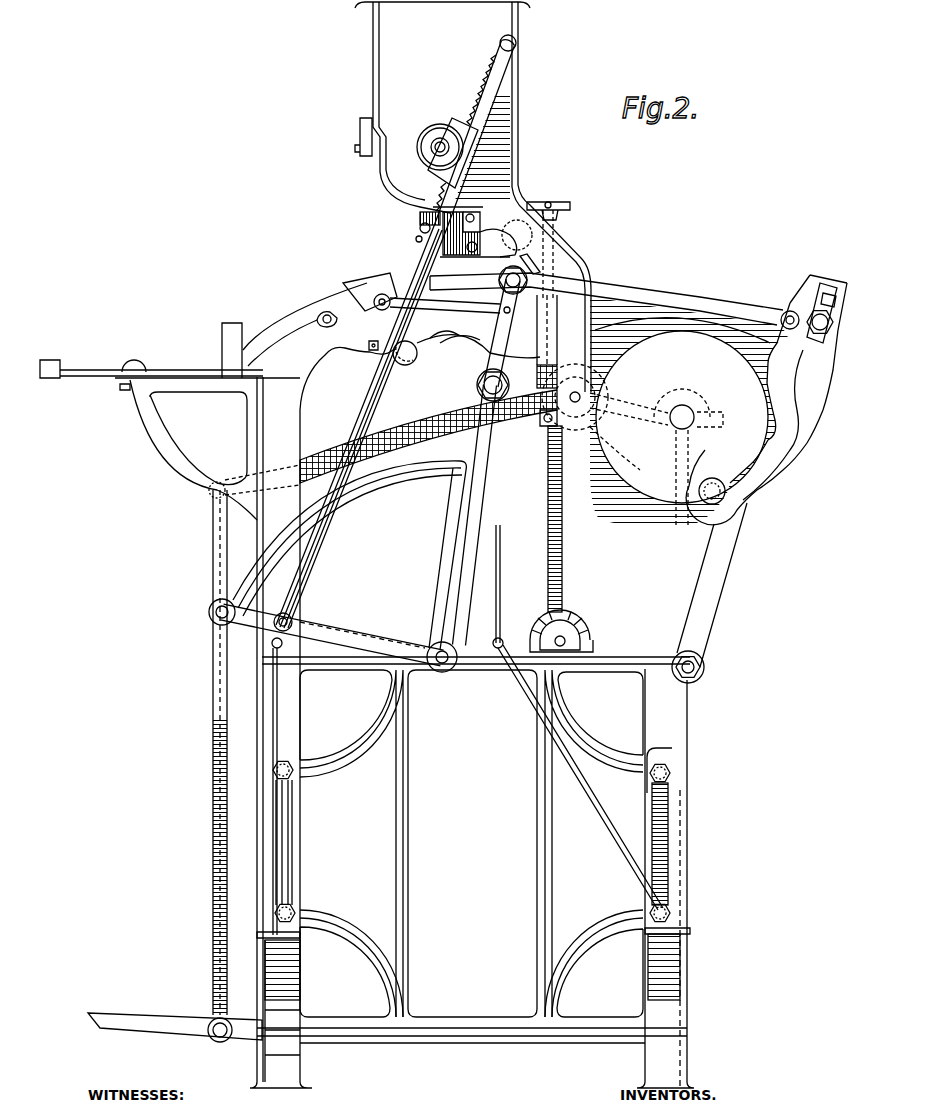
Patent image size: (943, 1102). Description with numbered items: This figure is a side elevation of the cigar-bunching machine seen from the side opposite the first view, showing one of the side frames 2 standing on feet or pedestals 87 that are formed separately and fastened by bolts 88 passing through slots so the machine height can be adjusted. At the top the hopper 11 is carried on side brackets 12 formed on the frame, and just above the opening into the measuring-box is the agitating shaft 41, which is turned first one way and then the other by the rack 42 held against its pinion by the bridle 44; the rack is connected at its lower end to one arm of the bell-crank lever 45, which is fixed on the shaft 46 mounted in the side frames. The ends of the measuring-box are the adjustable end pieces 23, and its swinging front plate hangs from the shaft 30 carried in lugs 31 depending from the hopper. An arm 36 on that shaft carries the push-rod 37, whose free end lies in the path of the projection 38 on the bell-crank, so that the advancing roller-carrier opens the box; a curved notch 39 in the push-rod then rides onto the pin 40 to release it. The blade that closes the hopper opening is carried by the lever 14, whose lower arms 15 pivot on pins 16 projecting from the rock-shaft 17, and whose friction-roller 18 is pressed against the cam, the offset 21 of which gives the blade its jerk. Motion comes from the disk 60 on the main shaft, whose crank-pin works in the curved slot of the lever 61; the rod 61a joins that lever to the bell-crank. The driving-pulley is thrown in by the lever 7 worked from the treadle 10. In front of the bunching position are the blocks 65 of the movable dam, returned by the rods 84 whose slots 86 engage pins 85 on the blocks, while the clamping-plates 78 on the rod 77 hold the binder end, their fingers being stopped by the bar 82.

The side frames 2 is at (450, 636).
The lever 7 is at (526, 417).
The treadle 10 is at (165, 1018).
The hopper 11 is at (442, 107).
The side brackets 12 is at (533, 212).
The lever 14 is at (563, 520).
The arms 15 is at (535, 622).
The pins 16 is at (585, 632).
The rock-shaft 17 is at (558, 645).
The friction-roller 18 is at (541, 430).
The projection or offset 21 is at (805, 374).
The adjustable end pieces 23 is at (367, 427).
The shaft 30 is at (419, 216).
The lugs 31 is at (430, 232).
The arm 36 is at (421, 233).
The push-rod 37 is at (480, 188).
The projection 38 is at (541, 268).
The curved notch 39 is at (512, 238).
The pin 40 is at (498, 280).
The shaft 41 is at (416, 149).
The rack 42 is at (480, 96).
The bridle 44 is at (458, 153).
The bell-crank lever 45 is at (455, 556).
The shaft 46 is at (442, 673).
The disk 60 is at (690, 402).
The lever 61 is at (367, 284).
The rod 61a is at (690, 303).
The blocks 65 is at (365, 297).
The rod 77 is at (408, 366).
The clamping-plates 78 is at (455, 343).
The bar 82 is at (367, 345).
The rods 84 is at (436, 310).
The pins 85 is at (338, 322).
The slots 86 is at (460, 330).
The feet or pedestals 87 is at (473, 1005).
The bolts 88 is at (672, 775).